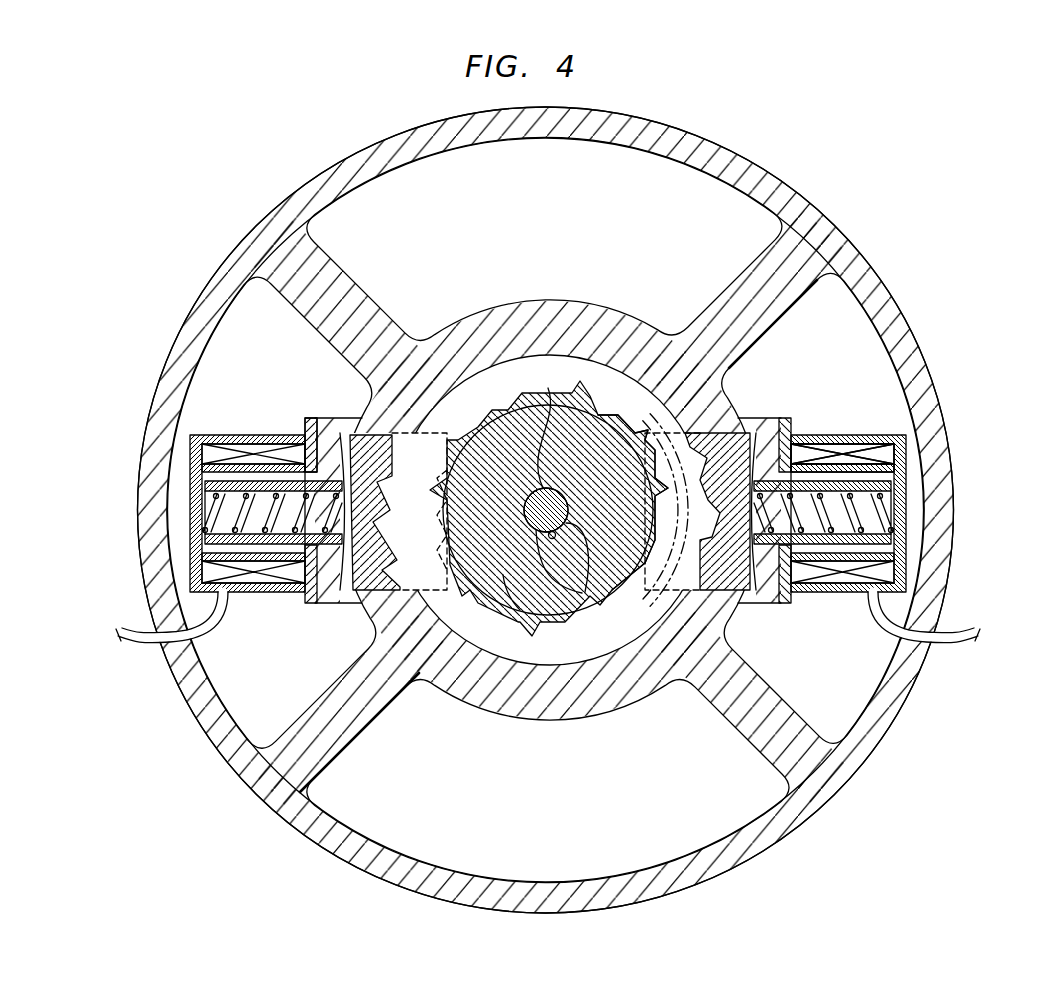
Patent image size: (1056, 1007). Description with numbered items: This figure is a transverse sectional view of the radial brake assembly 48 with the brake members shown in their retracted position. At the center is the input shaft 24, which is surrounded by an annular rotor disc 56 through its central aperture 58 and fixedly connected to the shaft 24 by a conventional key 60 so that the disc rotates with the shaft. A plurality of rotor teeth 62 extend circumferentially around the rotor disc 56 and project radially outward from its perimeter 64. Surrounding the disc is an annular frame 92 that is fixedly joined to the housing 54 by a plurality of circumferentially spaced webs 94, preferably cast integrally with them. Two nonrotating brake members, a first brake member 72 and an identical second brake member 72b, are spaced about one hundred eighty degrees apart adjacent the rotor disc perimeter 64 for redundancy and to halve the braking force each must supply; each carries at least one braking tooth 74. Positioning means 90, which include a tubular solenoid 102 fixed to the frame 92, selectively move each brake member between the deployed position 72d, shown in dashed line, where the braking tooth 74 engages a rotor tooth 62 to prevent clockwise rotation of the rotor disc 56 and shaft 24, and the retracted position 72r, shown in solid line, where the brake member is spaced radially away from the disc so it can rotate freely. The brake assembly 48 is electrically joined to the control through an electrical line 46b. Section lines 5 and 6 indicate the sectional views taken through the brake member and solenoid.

The radial brake assembly 48 is at (571, 507).
The housing 54 is at (717, 143).
The webs 94 is at (545, 509).
The annular frame 92 is at (577, 298).
The rotor teeth 62 is at (617, 385).
The positioning means 90 is at (200, 432).
The tubular solenoid 102 is at (835, 433).
The brake member 72 is at (742, 428).
The second brake member 72b is at (385, 428).
The retracted position 72r is at (343, 428).
The deployed position 72d is at (436, 600).
The rotor disc 56 is at (487, 405).
The braking tooth 74 is at (655, 487).
The input shaft 24 is at (546, 448).
The central aperture 58 is at (575, 617).
The key 60 is at (597, 612).
The perimeter 64 is at (506, 612).
The section line 5- 5 is at (645, 423).
The section line 6- 6 is at (672, 423).
The electrical line 46b is at (122, 640).